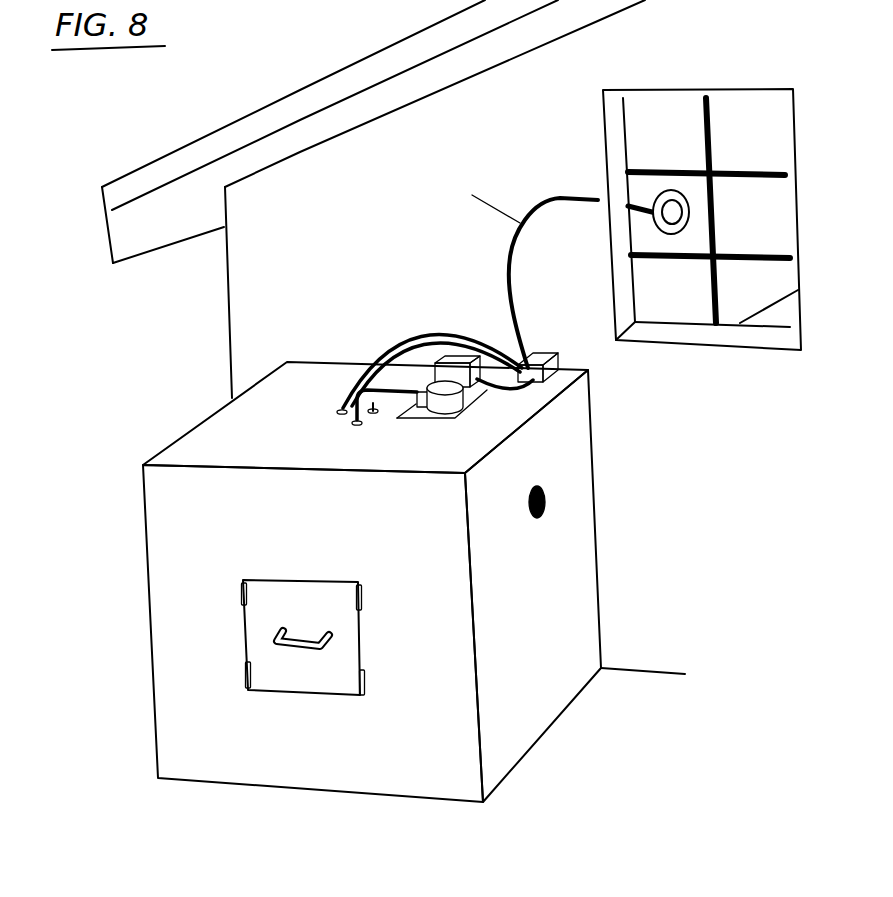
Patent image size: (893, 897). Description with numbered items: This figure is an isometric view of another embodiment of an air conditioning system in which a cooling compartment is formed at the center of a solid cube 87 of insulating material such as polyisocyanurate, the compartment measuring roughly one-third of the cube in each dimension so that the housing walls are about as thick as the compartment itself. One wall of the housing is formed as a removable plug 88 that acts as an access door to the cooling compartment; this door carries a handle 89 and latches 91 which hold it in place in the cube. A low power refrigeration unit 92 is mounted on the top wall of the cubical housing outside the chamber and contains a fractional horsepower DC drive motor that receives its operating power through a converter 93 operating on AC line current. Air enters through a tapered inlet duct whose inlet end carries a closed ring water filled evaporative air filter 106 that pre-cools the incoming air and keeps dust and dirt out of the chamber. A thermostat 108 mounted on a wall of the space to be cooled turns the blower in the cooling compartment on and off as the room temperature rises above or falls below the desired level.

The solid cube 87 is at (205, 437).
The removable plug 88 is at (295, 670).
The handle 89 is at (273, 647).
The latches 91 is at (242, 595).
The low power refrigeration unit 92 is at (453, 360).
The converter 93 is at (537, 355).
The evaporative air filter 106 is at (543, 507).
The thermostat 108 is at (660, 199).